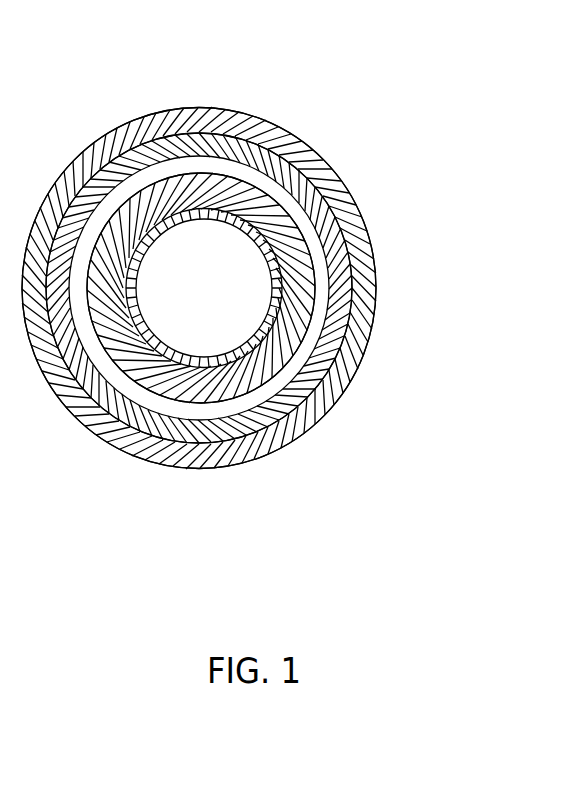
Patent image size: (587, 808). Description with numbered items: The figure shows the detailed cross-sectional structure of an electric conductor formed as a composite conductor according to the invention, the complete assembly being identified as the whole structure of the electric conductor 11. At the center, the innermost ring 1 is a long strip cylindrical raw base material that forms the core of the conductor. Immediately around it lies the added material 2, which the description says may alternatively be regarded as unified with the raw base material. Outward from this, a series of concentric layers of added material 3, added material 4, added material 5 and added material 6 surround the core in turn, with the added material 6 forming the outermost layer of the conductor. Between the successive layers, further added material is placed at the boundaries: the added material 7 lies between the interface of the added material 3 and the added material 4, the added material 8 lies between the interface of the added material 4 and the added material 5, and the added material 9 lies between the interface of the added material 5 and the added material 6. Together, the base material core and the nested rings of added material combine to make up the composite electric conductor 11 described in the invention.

The innermost ring 1 is at (215, 322).
The added material 2 is at (182, 355).
The added material 3 is at (154, 369).
The added material 4 is at (166, 165).
The added material 5 is at (136, 158).
The added material 6 is at (76, 167).
The added material between interface 3 and 4 7 is at (313, 298).
The added material between interface 4 and 5 8 is at (340, 343).
The added material between interface 5 and 6 9 is at (330, 380).
The whole structure of the electric conductor 11 is at (246, 305).